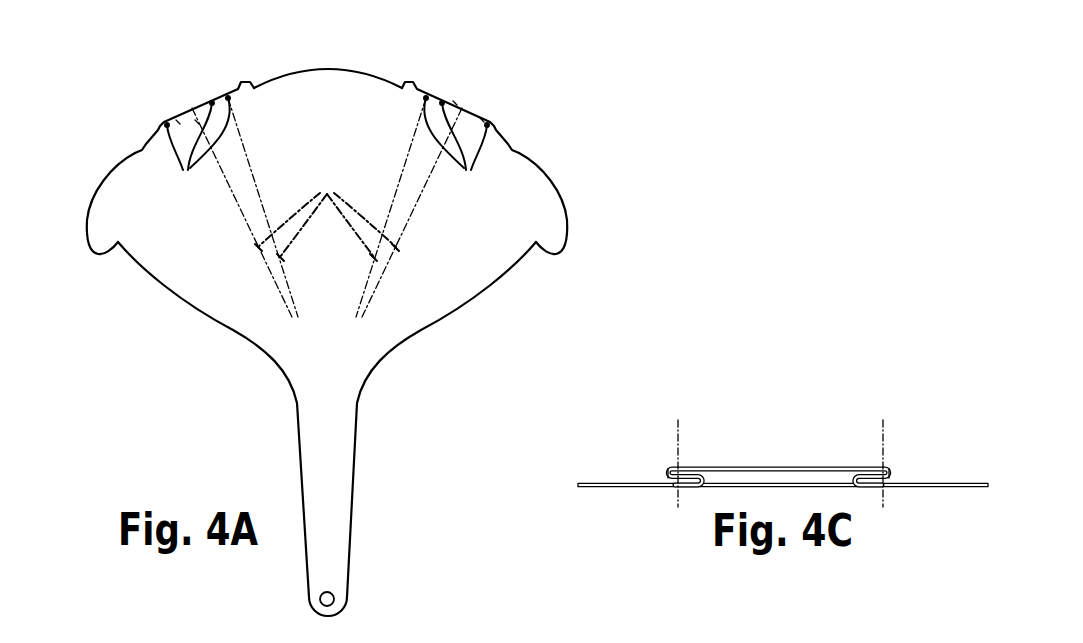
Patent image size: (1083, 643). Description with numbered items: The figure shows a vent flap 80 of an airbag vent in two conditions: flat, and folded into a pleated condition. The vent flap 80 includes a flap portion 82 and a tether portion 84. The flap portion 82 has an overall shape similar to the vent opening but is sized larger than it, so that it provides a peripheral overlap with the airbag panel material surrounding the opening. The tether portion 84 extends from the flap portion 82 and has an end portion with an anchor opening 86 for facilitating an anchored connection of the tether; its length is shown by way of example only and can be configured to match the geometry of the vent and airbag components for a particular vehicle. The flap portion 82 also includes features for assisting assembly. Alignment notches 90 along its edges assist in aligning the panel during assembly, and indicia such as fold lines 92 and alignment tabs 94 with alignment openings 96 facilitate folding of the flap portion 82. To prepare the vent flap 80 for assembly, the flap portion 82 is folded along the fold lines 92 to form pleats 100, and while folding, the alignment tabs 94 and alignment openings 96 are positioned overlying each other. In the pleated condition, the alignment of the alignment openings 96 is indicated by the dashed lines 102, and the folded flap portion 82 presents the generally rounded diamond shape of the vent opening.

In FIG. 4A, the vent flap 80 is at (140, 102).
In FIG. 4C, the vent flap 80 is at (783, 418).
In FIG. 4A, the flap portion 82 is at (328, 128).
In FIG. 4C, the flap portion 82 is at (770, 467).
In FIG. 4A, the tether portion 84 is at (327, 477).
In FIG. 4A, the anchor opening 86 is at (334, 598).
In FIG. 4A, the alignment notches 90 is at (136, 149).
In FIG. 4A, the fold lines 92 is at (327, 214).
In FIG. 4A, the alignment tabs 94 is at (196, 121).
In FIG. 4A, the alignment openings 96 is at (336, 206).
In FIG. 4C, the pleats 100 is at (688, 466).
In FIG. 4C, the dashed lines indicating alignment of alignment openings 102 is at (678, 428).